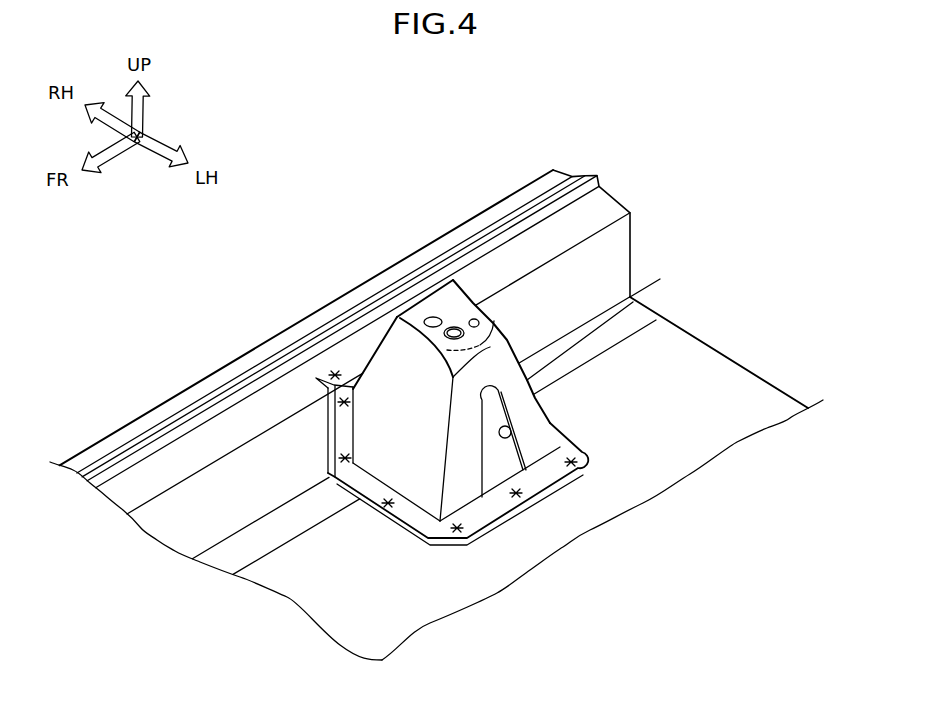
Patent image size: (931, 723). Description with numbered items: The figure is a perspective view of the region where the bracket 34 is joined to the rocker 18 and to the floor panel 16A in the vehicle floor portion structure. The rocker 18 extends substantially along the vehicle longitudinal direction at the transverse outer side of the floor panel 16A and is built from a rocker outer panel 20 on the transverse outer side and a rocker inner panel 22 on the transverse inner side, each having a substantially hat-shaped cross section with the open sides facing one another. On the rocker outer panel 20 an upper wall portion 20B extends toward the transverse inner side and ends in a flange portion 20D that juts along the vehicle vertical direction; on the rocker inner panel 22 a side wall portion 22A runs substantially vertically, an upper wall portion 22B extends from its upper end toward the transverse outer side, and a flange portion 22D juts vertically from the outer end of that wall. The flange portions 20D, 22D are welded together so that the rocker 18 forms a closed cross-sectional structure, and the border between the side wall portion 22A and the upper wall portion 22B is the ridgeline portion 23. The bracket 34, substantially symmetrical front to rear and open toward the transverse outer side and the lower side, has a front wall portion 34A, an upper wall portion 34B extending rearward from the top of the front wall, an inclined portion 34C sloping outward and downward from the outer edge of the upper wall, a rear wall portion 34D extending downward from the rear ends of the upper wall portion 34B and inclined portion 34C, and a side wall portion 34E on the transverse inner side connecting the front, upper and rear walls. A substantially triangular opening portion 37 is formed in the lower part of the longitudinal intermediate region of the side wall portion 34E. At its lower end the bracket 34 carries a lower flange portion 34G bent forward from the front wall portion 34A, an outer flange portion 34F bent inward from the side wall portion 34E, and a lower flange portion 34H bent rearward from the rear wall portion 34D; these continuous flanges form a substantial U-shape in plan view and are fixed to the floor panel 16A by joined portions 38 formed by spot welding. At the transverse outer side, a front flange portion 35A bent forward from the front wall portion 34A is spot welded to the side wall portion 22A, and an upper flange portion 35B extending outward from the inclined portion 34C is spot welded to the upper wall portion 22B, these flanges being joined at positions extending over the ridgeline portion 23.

The floor panel 16A is at (702, 378).
The rocker 18 is at (372, 342).
The rocker outer panel 20 is at (329, 329).
The upper wall portion 20B is at (85, 462).
The flange portions 20D is at (167, 422).
The rocker inner panel 22 is at (342, 460).
The side wall portion 22A is at (162, 515).
The upper wall portion 22B is at (130, 497).
The flange portions 22D is at (217, 419).
The ridgeline portion 23 is at (587, 239).
The bracket 34 is at (532, 406).
The front wall portion 34A is at (424, 448).
The upper wall portion 34B is at (447, 304).
The inclined portion 34C is at (375, 352).
The rear wall portion 34D is at (630, 297).
The side wall portion 34E is at (540, 450).
The outer flange portion 34F is at (497, 520).
The lower flange portion 34G is at (383, 520).
The lower flange portion 34H is at (562, 433).
The front flange portion 35A is at (336, 437).
The upper flange portion 35B is at (352, 362).
The opening portion 37 is at (522, 440).
The joined portions 38 is at (334, 374).